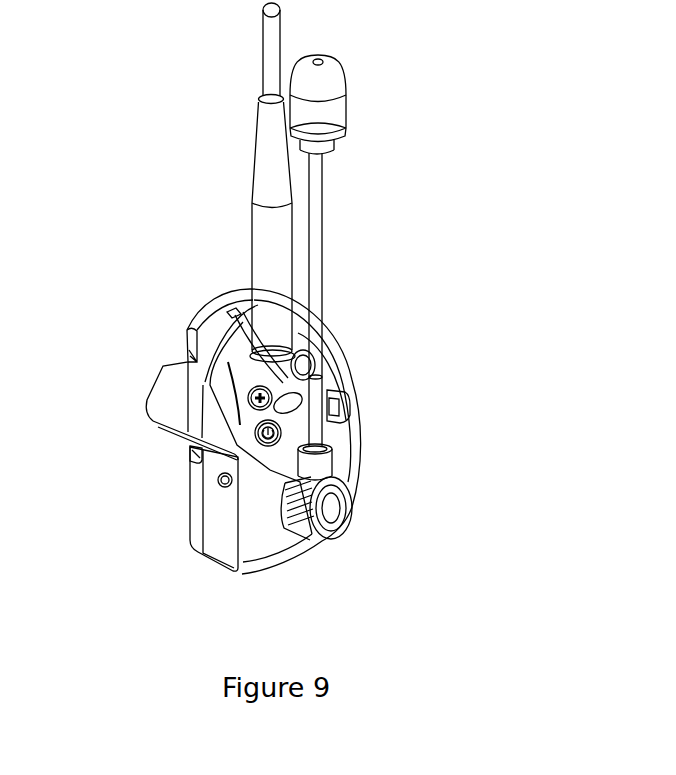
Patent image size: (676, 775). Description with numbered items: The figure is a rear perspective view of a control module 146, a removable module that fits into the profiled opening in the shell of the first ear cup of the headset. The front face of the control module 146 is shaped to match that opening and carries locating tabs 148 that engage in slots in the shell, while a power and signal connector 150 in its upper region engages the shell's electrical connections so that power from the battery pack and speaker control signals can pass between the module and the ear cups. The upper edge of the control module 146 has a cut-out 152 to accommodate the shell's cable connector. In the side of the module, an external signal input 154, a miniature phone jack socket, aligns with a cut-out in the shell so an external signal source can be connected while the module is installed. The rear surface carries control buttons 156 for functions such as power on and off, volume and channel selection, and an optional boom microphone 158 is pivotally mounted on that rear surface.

The control module 146 is at (386, 472).
The locating tabs 148 is at (189, 449).
The power and signal connector 150 is at (273, 219).
The cut-out 152 is at (172, 381).
The external signal input 154 is at (218, 487).
The control buttons 156 is at (268, 448).
The boom microphone 158 is at (340, 306).